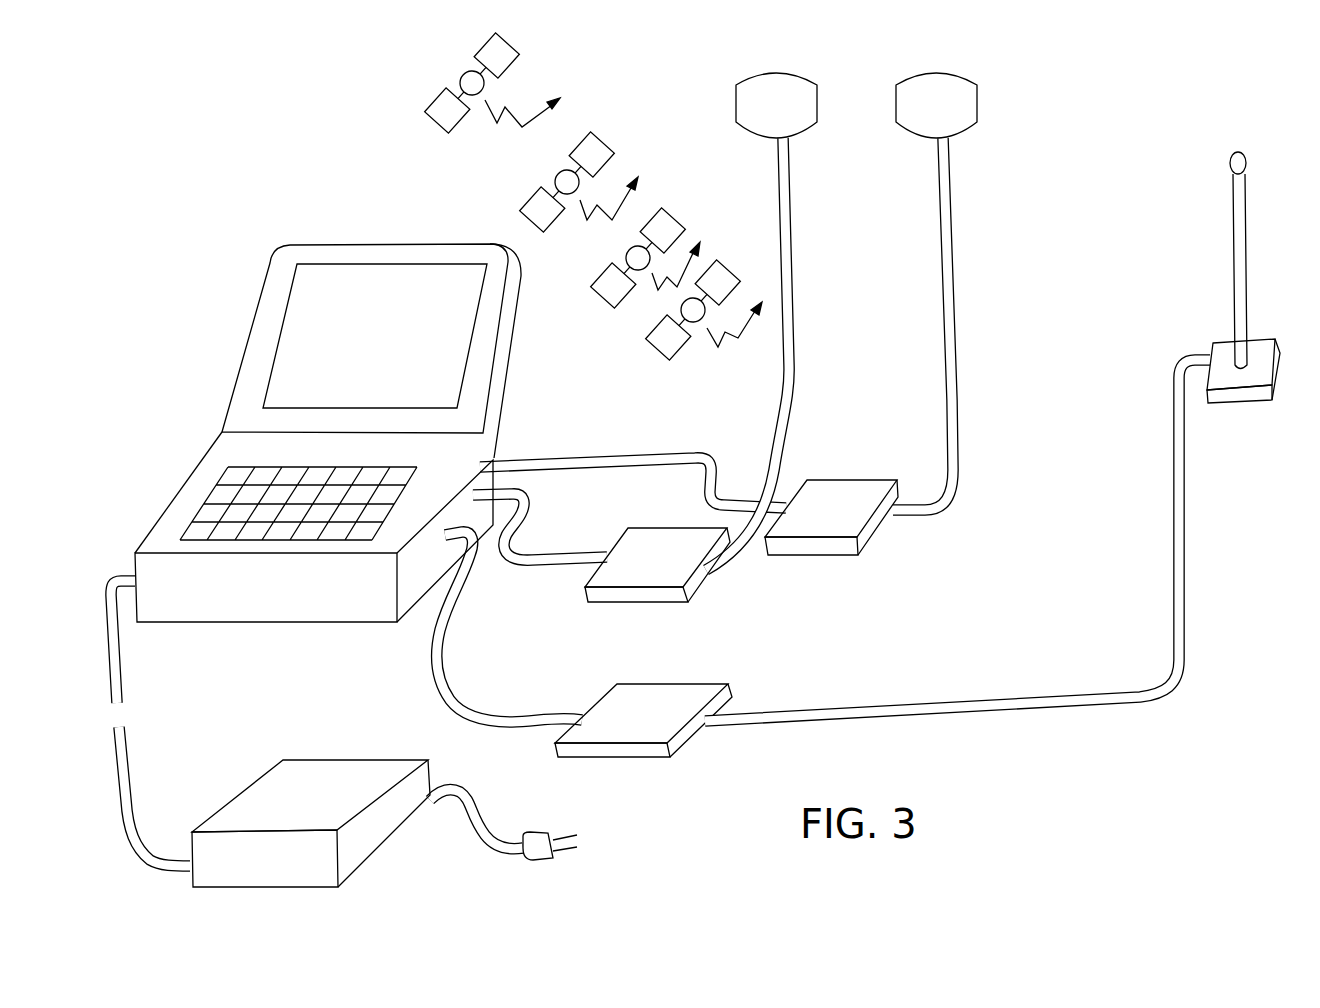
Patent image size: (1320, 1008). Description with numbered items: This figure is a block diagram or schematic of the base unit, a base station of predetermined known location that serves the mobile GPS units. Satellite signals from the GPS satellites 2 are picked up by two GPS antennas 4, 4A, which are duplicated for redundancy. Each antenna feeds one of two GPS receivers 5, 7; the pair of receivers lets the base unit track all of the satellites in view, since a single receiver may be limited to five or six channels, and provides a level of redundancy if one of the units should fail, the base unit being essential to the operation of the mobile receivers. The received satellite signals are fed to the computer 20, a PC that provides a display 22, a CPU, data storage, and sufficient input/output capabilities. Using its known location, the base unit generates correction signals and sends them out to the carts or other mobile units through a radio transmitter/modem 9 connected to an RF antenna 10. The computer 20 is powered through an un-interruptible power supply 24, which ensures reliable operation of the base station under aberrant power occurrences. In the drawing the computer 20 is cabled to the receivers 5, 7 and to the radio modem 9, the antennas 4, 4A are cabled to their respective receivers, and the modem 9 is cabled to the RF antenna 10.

The GPS satellites 2 is at (552, 45).
The GPS antenna 4 is at (788, 200).
The GPS antenna 4A is at (977, 110).
The GPS receiver 5 is at (670, 574).
The GPS receiver 7 is at (850, 526).
The radio transmitter/modem 9 is at (654, 734).
The RF antenna 10 is at (1243, 270).
The computer 20 is at (328, 386).
The display screen 22 is at (386, 325).
The power supply 24 is at (322, 816).